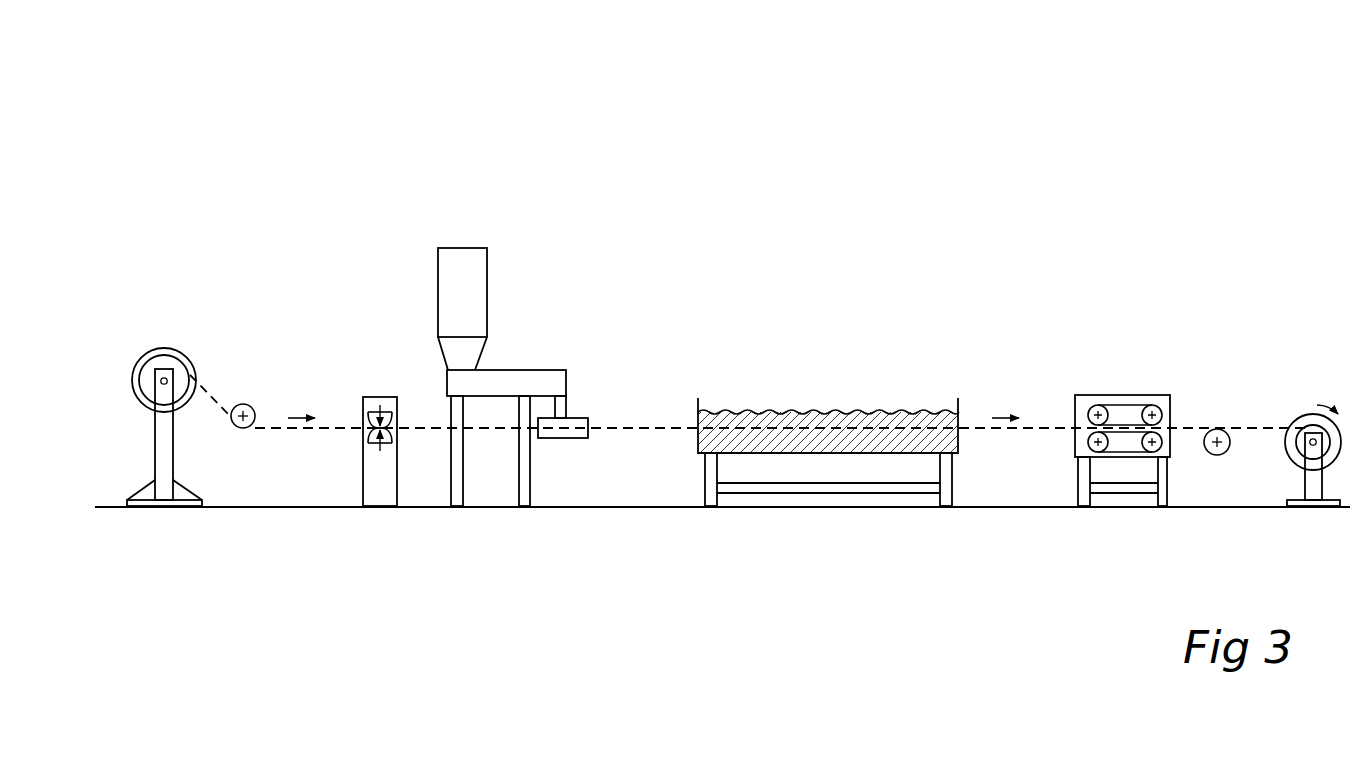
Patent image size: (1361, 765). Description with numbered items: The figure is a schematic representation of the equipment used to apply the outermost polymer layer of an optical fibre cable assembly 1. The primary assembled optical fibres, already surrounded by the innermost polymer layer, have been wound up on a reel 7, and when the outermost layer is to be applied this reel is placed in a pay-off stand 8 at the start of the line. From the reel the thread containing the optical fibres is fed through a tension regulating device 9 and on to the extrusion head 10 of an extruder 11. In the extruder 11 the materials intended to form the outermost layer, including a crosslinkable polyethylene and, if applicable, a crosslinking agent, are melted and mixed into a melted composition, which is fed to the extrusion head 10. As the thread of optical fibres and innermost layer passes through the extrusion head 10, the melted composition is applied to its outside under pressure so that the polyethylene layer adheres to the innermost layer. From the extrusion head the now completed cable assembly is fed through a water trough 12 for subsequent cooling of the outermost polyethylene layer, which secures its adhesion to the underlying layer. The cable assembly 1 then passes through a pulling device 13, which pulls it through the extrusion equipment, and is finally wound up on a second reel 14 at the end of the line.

The cable assembly 1 is at (657, 427).
The reel 7 is at (160, 353).
The pay-off stand 8 is at (160, 443).
The tension regulating device 9 is at (380, 403).
The extrusion head 10 is at (560, 438).
The extruder 11 is at (538, 377).
The water trough 12 is at (885, 420).
The pulling device 13 is at (1132, 400).
The second reel 14 is at (1302, 422).